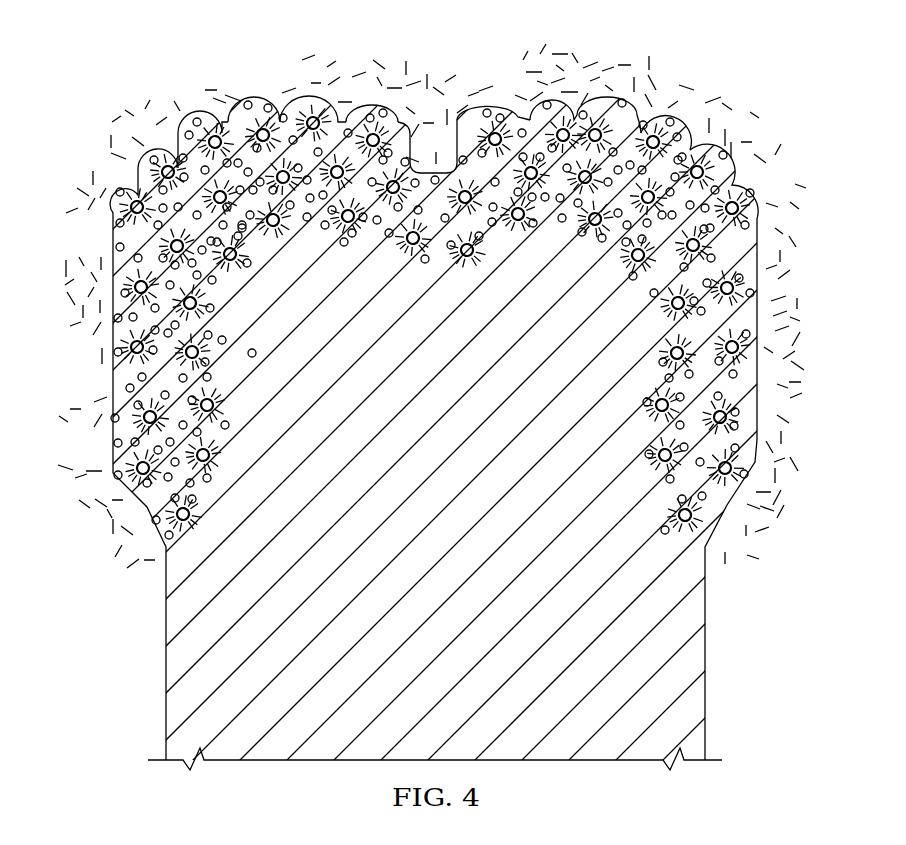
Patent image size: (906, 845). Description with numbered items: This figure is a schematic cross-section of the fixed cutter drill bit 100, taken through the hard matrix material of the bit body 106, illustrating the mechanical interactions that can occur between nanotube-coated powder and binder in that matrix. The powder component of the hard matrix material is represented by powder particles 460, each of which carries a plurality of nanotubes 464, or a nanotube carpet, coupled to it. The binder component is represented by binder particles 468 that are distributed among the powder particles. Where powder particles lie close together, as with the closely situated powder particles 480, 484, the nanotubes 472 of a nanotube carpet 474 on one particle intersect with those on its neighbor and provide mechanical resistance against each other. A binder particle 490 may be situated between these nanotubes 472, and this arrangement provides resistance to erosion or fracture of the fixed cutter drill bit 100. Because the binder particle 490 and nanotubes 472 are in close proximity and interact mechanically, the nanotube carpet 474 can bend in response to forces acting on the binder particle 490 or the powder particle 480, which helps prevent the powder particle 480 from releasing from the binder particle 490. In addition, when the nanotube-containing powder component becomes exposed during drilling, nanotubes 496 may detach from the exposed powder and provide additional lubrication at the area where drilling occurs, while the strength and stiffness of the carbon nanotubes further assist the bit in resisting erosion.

The fixed cutter drill bit 100 is at (92, 62).
The bit body 106 is at (453, 477).
The powder particles 460 is at (124, 343).
The nanotubes 464 is at (121, 262).
The binder particles 468 is at (187, 127).
The nanotubes 472 is at (233, 115).
The nanotube carpet 474 is at (637, 120).
The powder particle 480 is at (576, 118).
The powder particle 484 is at (626, 119).
The binder particle 490 is at (520, 118).
The nanotubes 496 is at (95, 183).